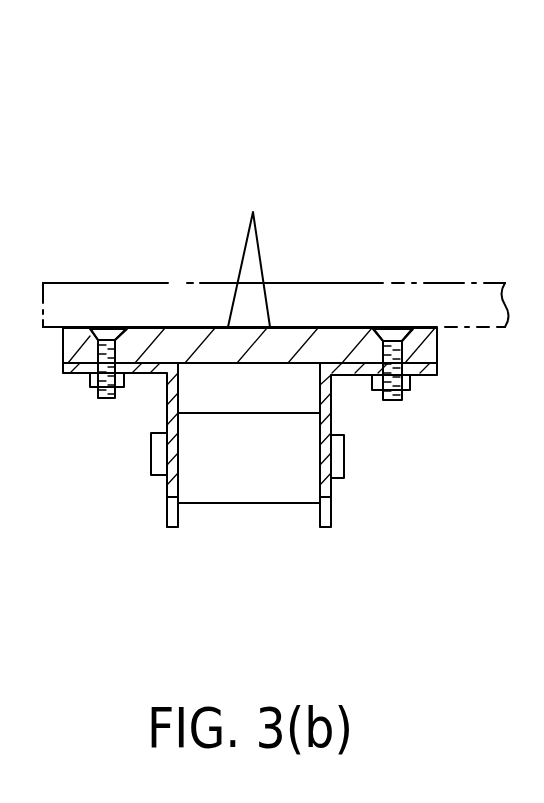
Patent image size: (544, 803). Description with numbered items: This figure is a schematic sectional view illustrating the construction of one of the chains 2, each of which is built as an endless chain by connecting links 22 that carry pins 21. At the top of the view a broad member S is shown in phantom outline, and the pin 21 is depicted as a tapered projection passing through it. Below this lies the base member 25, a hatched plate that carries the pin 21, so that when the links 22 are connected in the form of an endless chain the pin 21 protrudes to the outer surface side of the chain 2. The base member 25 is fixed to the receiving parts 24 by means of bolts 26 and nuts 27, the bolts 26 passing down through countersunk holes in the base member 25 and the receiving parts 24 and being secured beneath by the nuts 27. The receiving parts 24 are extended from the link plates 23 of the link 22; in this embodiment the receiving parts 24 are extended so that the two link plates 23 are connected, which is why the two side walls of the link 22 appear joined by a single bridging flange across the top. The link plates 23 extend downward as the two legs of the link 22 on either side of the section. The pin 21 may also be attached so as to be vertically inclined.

The chain 2 is at (185, 70).
The support surface S is at (167, 283).
The pin 21 is at (250, 253).
The link 22 is at (274, 490).
The link plate 23 is at (167, 512).
The receiving part 24 is at (65, 370).
The base member 25 is at (337, 345).
The bolt 26 is at (110, 325).
The nut 27 is at (97, 383).